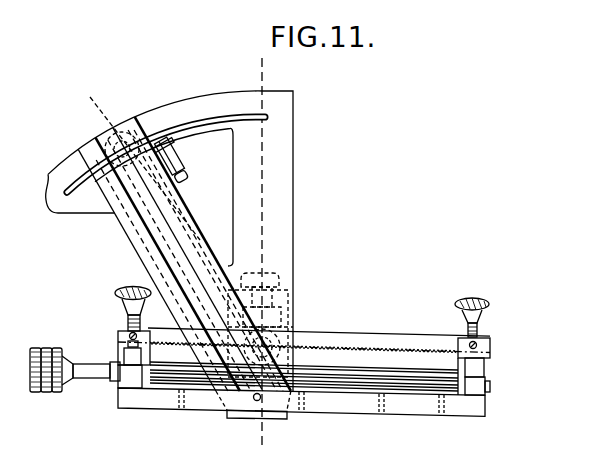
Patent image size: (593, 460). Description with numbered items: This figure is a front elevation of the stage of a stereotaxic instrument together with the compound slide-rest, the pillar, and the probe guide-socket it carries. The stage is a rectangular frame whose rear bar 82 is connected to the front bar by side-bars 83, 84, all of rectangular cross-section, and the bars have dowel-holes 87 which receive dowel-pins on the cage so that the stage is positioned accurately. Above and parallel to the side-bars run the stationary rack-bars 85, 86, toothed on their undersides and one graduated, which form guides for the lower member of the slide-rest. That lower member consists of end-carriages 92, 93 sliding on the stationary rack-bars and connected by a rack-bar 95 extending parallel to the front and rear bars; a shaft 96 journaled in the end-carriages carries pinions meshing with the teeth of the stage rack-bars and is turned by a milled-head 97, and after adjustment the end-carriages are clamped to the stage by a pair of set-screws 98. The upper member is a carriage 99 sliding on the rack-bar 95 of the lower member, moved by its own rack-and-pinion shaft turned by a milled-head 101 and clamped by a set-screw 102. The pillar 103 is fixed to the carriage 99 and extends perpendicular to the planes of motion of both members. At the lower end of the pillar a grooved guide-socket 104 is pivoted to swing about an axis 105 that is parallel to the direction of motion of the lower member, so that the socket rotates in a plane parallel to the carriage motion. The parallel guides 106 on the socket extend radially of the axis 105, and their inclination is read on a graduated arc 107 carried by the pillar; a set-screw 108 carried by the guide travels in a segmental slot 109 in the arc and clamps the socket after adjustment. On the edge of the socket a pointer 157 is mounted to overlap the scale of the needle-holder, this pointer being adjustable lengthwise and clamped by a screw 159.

The rear bar 82 is at (353, 403).
The side-bar 83 is at (128, 378).
The side-bar 84 is at (479, 389).
The stationary rack-bar 85 is at (128, 355).
The stationary rack-bar 86 is at (477, 368).
The dowel-holes 87 is at (181, 410).
The end-carriage 92 is at (119, 331).
The end-carriage 93 is at (486, 347).
The rack-bar 95 is at (425, 336).
The shaft 96 is at (360, 371).
The milled-head 97 is at (58, 388).
The set-screws 98 is at (131, 288).
The carriage 99 is at (290, 308).
The milled-head 101 is at (293, 328).
The set-screw 102 is at (266, 273).
The pillar 103 is at (277, 218).
The guide-socket 104 is at (143, 253).
The axis 105 is at (255, 401).
The parallel guides 106 is at (168, 203).
The graduated arc 107 is at (70, 161).
The set-screw 108 is at (119, 130).
The segmental slot 109 is at (202, 117).
The pointer 157 is at (183, 171).
The screw 159 is at (181, 128).